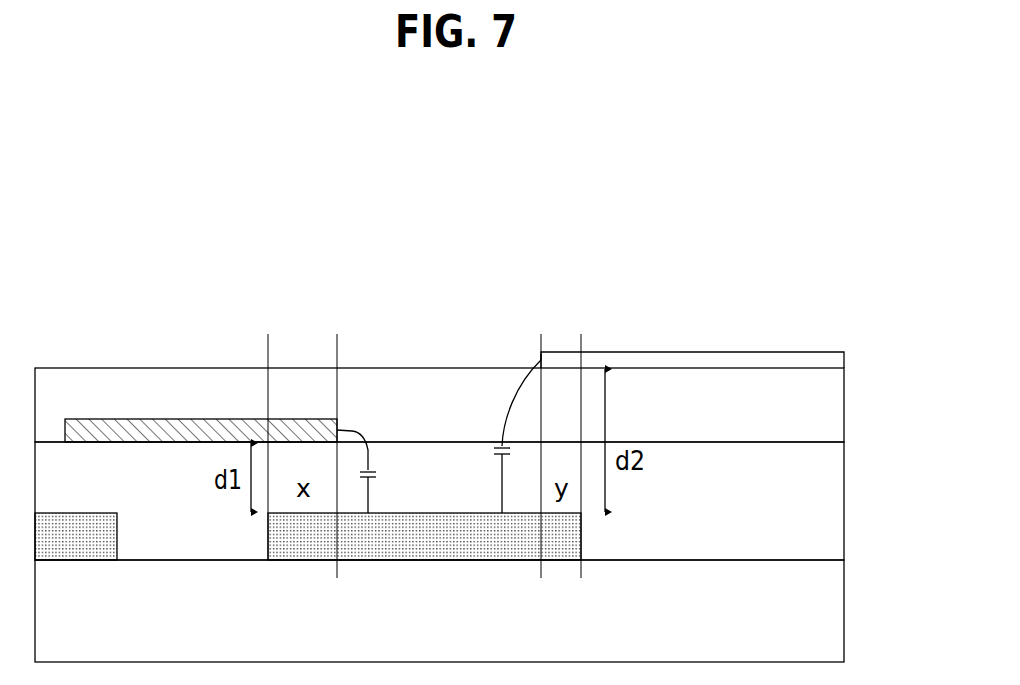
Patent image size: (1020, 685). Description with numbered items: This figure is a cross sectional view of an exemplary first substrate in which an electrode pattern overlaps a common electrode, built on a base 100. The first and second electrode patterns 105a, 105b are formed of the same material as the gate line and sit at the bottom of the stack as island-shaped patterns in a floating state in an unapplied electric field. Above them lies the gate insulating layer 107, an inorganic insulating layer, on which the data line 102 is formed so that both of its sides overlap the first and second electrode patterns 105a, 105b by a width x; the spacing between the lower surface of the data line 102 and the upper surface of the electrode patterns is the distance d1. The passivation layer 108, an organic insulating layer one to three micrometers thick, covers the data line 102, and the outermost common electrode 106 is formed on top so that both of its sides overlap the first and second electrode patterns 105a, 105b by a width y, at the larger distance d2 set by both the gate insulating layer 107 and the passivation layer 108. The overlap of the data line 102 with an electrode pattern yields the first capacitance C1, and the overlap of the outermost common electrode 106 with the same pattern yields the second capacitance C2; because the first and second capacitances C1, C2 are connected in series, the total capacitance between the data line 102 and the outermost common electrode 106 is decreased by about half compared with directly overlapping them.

The substrate 100 is at (830, 608).
The data line 102 is at (175, 430).
The first electrode pattern 105a is at (105, 535).
The second electrode pattern 105b is at (582, 540).
The outermost common electrode 106 is at (706, 358).
The gate insulating layer 107 is at (830, 503).
The passivation layer 108 is at (830, 404).
The first capacitance C1 is at (372, 471).
The second capacitance C2 is at (503, 433).